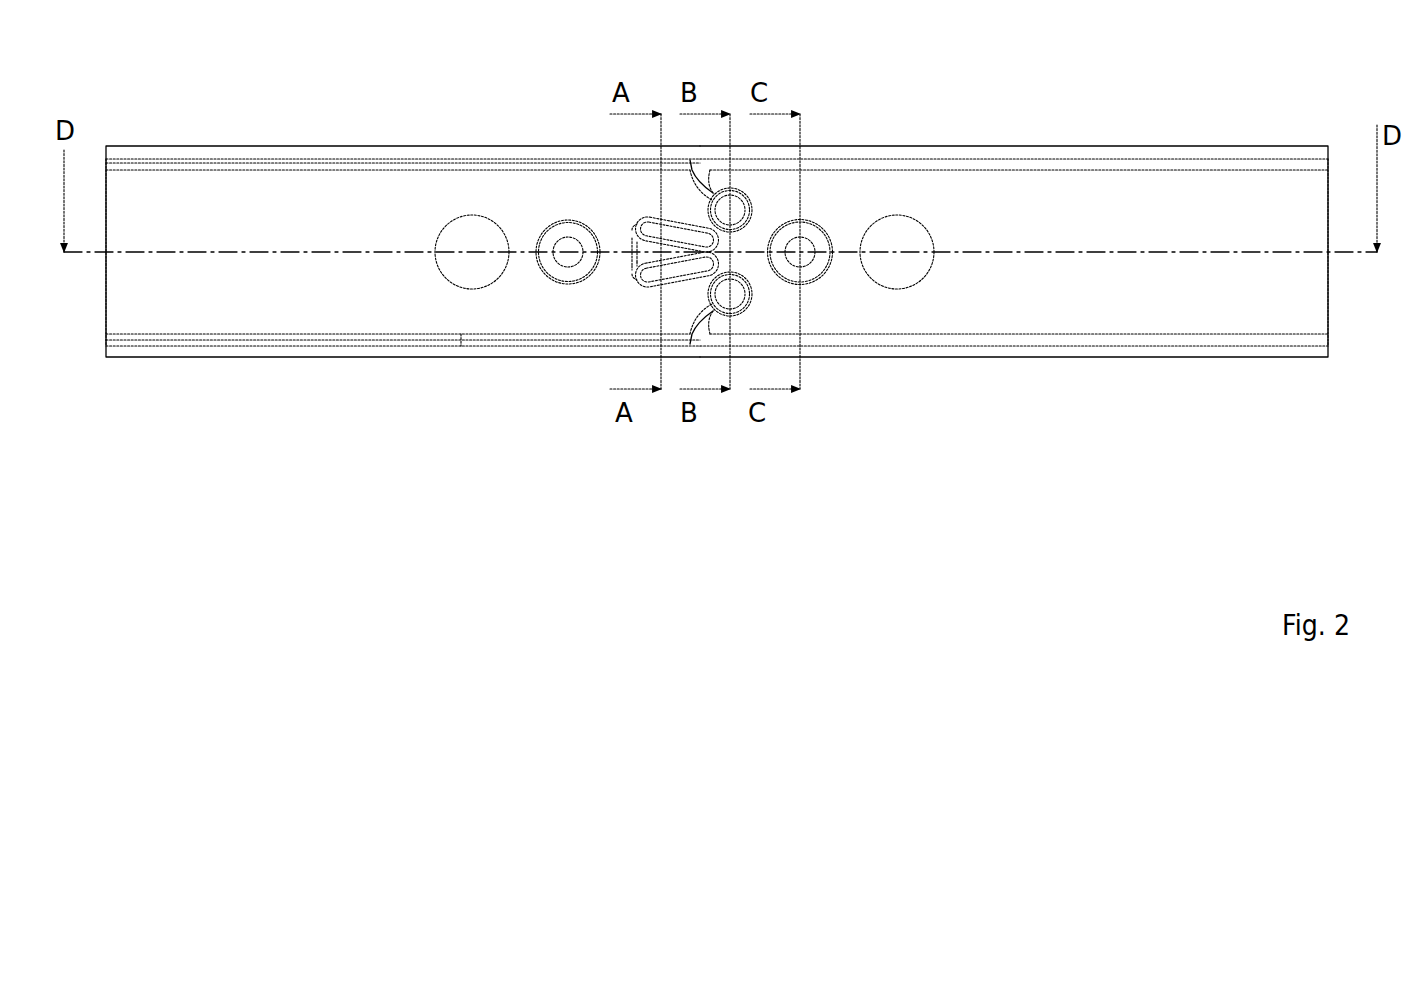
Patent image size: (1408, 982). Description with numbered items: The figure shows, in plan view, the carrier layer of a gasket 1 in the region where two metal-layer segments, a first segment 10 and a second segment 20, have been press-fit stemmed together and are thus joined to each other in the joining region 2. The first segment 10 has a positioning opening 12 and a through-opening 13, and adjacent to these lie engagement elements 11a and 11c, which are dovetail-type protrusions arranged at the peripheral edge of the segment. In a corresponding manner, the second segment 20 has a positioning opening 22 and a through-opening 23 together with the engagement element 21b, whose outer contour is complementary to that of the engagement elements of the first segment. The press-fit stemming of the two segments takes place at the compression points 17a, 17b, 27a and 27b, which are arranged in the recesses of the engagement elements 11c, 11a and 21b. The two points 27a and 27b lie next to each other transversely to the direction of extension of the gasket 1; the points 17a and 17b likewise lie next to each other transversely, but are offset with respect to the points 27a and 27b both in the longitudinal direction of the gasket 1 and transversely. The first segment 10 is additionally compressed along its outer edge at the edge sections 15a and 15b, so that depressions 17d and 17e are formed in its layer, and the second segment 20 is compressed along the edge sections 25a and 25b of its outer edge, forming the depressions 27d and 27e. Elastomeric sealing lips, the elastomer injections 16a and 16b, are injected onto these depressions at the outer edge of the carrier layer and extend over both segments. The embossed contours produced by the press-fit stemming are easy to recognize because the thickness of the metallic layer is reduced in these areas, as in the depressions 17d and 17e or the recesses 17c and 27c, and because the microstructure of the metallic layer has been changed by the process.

The gasket 1 is at (345, 412).
The joining region 2 is at (460, 325).
The first segment 10 is at (313, 310).
The engagement element 11a is at (597, 342).
The engagement element 11c is at (610, 237).
The positioning opening 12 is at (462, 260).
The through-opening 13 is at (567, 242).
The edge section 15a is at (390, 345).
The edge section 15b is at (327, 157).
The elastomer injection 16a is at (480, 353).
The elastomer injection 16b is at (440, 155).
The compression point 17a is at (705, 207).
The compression point 17b is at (710, 290).
The recess 17c is at (552, 278).
The depression 17d is at (177, 340).
The depression 17e is at (204, 165).
The second segment 20 is at (1073, 307).
The engagement element 21b is at (636, 242).
The positioning opening 22 is at (905, 262).
The through-opening 23 is at (807, 263).
The edge section 25a is at (1155, 343).
The edge section 25b is at (932, 158).
The compression point 27a is at (710, 240).
The compression point 27b is at (710, 264).
The recess 27c is at (815, 222).
The depression 27d is at (945, 338).
The depression 27e is at (1127, 165).